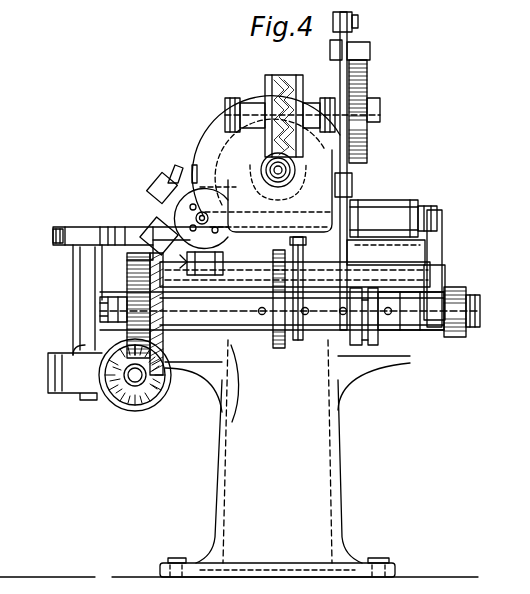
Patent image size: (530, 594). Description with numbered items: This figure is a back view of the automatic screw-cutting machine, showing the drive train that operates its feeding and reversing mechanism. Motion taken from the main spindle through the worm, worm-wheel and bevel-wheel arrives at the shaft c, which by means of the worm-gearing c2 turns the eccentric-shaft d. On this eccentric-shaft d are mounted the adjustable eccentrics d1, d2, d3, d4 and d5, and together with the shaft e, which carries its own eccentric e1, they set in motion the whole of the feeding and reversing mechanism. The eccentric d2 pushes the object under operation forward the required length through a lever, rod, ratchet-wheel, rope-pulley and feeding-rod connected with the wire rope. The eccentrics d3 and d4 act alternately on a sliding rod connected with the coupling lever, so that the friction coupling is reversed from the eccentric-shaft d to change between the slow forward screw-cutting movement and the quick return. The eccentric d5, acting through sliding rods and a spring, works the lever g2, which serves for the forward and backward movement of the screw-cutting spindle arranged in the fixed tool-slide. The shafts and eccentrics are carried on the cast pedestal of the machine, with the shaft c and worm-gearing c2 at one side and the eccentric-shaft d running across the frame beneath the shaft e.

The shaft c is at (163, 363).
The worm-gearing c2 is at (122, 280).
The shaft e is at (87, 227).
The eccentric e1 is at (53, 239).
The eccentric-shaft d is at (480, 302).
The eccentric d1 is at (282, 362).
The eccentric d2 is at (298, 334).
The eccentric d3 is at (357, 347).
The eccentric d4 is at (412, 338).
The eccentric d5 is at (437, 283).
The lever g2 is at (436, 247).